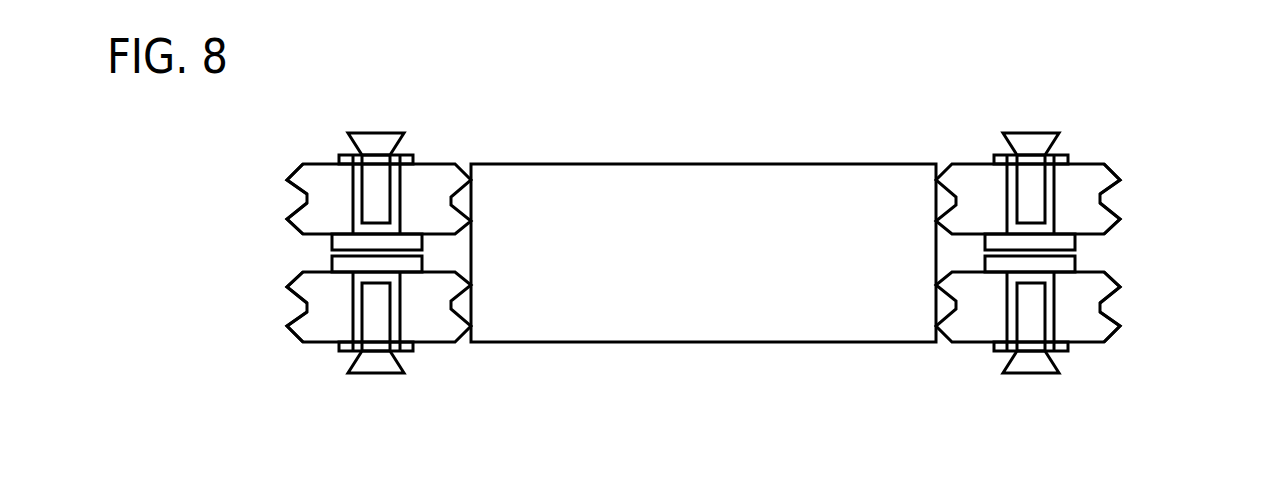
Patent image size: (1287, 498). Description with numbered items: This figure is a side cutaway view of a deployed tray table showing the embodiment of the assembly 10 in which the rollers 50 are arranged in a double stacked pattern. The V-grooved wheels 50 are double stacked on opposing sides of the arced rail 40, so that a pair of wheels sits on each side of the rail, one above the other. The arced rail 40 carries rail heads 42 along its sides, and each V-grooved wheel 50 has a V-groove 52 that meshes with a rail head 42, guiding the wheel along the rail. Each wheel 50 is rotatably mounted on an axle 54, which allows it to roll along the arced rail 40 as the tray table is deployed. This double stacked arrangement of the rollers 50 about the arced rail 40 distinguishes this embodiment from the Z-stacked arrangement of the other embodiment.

The assembly 10 is at (329, 110).
The arced rail 40 is at (727, 202).
The rail head 42 is at (468, 200).
The roller 50 is at (306, 215).
The V-groove 52 is at (291, 188).
The axle 54 is at (380, 132).